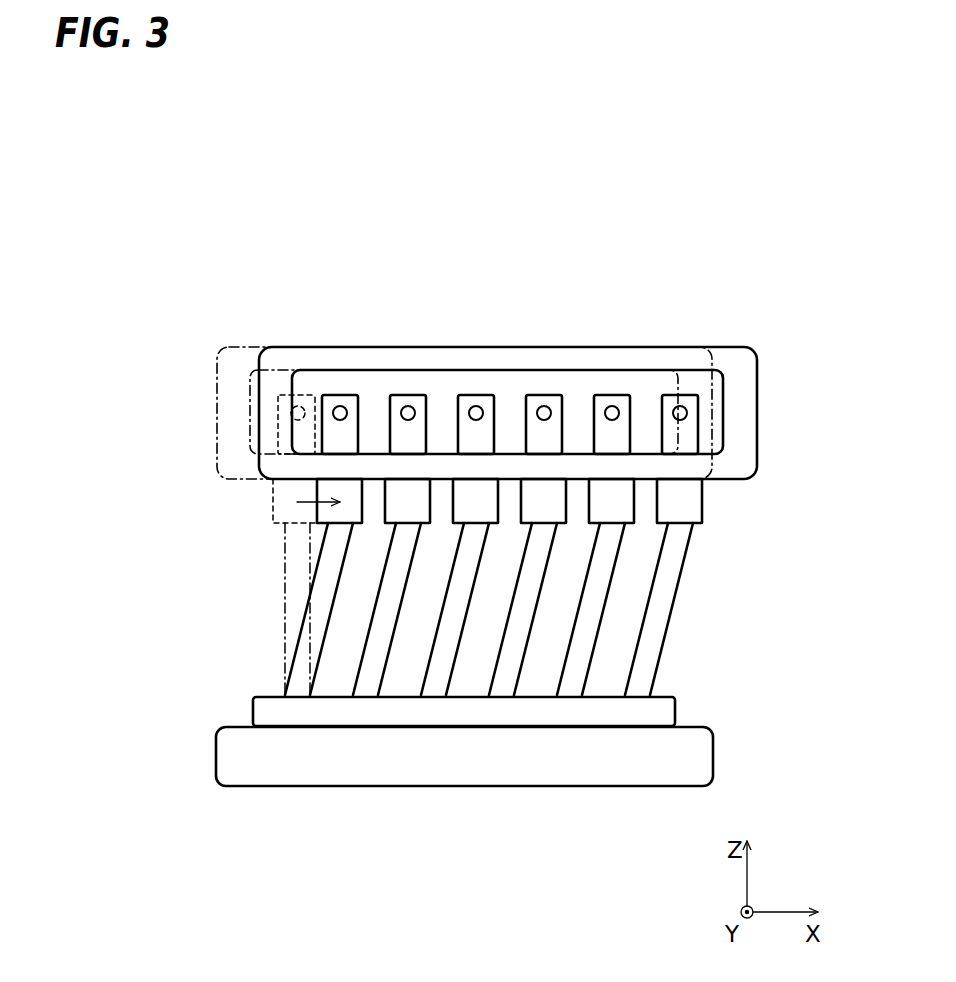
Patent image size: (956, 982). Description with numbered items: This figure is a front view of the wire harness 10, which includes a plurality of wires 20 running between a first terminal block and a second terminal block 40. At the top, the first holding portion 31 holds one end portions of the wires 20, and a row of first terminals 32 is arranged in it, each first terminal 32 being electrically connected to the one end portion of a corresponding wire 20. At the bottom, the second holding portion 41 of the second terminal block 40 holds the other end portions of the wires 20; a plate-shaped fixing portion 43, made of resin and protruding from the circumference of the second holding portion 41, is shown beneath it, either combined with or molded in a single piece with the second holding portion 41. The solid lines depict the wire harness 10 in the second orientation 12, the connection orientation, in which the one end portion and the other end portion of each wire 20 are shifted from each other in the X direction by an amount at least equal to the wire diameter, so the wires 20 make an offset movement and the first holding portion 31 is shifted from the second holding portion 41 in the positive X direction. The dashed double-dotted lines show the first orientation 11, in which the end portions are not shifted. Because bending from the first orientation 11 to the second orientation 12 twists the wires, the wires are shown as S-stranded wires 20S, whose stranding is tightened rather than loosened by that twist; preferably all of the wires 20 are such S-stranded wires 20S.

The wire harness 10 is at (300, 193).
The first orientation 11 is at (243, 347).
The second orientation 12 is at (735, 332).
The first holding portion 31 is at (258, 452).
The first terminals 32 is at (340, 395).
The wires 20 is at (430, 631).
The S-stranded wire 20S is at (302, 617).
The second terminal block 40 is at (728, 752).
The second holding portion 41 is at (665, 713).
The fixing portion 43 is at (665, 772).